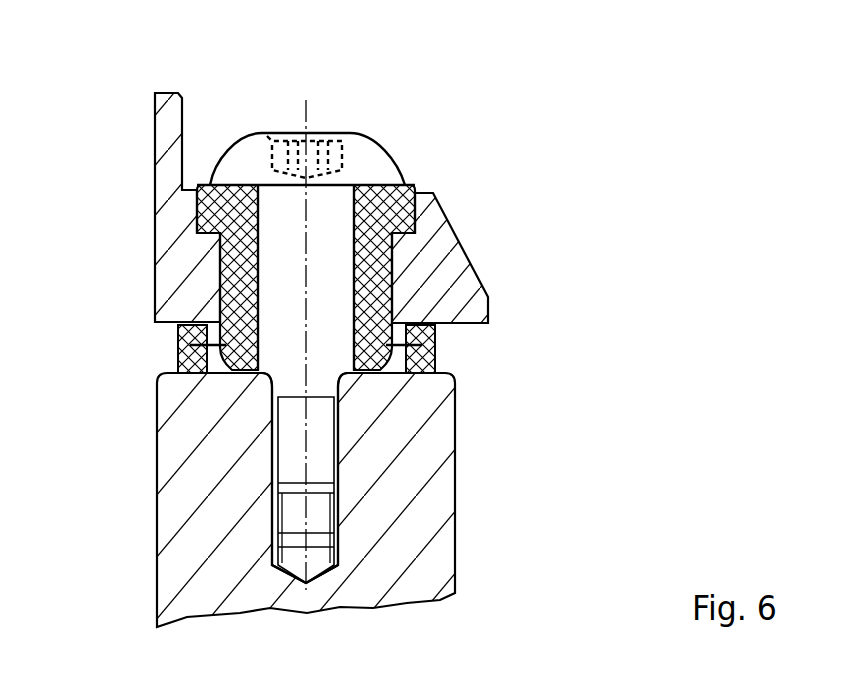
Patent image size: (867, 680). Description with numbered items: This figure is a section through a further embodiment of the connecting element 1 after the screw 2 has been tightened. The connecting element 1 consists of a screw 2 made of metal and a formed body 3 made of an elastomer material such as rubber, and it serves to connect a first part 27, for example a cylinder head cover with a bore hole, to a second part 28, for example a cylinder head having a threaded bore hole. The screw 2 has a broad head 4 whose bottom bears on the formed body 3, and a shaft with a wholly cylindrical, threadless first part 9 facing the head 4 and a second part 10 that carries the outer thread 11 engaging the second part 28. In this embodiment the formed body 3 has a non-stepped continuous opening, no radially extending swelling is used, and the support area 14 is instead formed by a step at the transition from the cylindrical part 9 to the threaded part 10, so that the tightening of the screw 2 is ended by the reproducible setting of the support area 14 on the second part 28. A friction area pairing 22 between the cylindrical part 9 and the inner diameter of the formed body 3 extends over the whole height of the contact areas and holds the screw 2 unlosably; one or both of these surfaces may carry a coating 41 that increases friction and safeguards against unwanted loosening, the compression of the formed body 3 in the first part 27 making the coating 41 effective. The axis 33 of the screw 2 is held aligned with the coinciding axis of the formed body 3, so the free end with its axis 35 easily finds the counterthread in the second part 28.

The connecting element 1 is at (321, 317).
The screw 2 is at (428, 190).
The formed body 3 is at (325, 238).
The head 4 is at (370, 158).
The first part of the shaft 9 is at (333, 310).
The second part of the shaft 10 is at (317, 432).
The outer thread 11 is at (333, 467).
The support area 14 is at (275, 381).
The friction area pairing 22 is at (245, 258).
The first part 27 is at (445, 264).
The second part 28 is at (422, 557).
The axis 33 is at (305, 115).
The axis of the free end 35 is at (307, 443).
The coating 41 is at (235, 183).